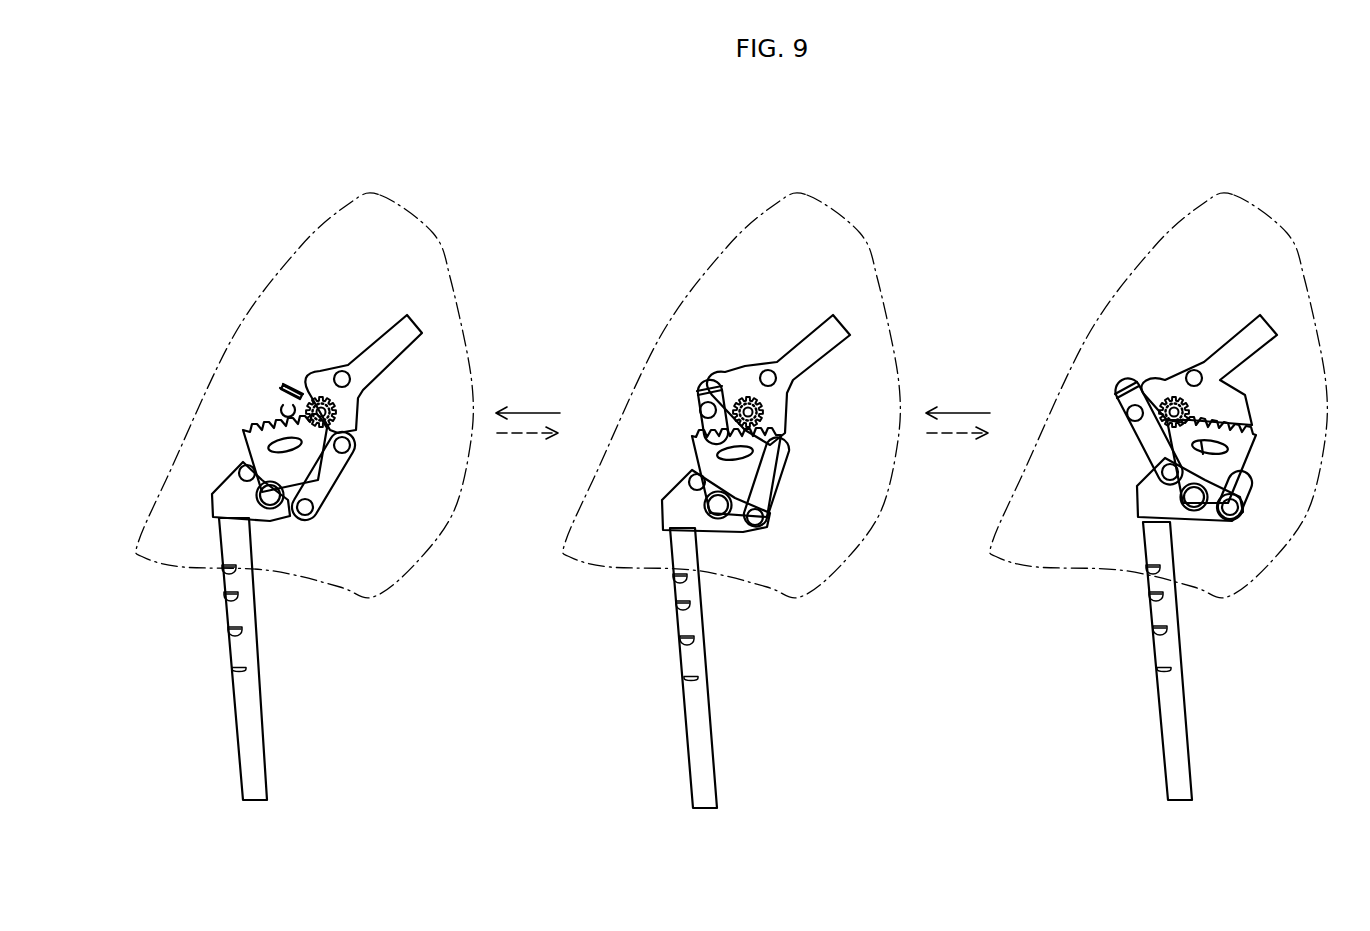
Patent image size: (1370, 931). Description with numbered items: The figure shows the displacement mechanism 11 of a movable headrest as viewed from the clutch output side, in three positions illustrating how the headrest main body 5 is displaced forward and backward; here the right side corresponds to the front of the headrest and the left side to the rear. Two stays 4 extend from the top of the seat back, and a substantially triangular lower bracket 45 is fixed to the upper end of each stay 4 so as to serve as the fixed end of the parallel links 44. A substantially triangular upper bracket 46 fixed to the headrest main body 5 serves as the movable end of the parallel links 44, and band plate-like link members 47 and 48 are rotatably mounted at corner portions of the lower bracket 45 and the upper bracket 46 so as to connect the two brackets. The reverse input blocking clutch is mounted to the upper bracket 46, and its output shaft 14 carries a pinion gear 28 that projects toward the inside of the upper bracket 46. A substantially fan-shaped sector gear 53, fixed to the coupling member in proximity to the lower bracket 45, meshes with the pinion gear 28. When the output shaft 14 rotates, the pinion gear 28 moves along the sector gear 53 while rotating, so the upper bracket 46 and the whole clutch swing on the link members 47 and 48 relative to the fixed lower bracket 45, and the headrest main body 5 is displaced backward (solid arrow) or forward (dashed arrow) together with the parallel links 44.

The stay 4 is at (250, 652).
The headrest main body 5 is at (452, 277).
The displacement mechanism 11 is at (265, 357).
The output shaft 14 is at (337, 411).
The pinion gear 28 is at (317, 398).
The parallel link 44 is at (368, 486).
The lower bracket 45 is at (222, 508).
The upper bracket 46 is at (357, 420).
The link member 47 is at (327, 482).
The link member 48 is at (244, 455).
The sector gear 53 is at (268, 435).